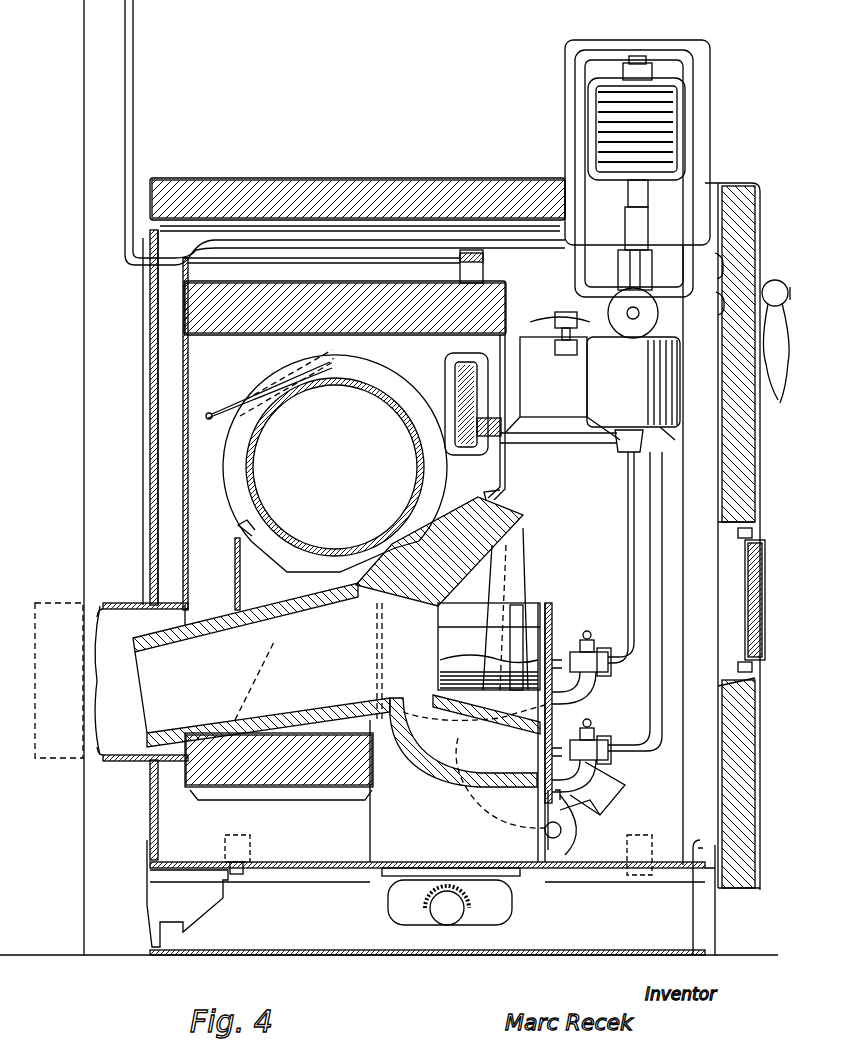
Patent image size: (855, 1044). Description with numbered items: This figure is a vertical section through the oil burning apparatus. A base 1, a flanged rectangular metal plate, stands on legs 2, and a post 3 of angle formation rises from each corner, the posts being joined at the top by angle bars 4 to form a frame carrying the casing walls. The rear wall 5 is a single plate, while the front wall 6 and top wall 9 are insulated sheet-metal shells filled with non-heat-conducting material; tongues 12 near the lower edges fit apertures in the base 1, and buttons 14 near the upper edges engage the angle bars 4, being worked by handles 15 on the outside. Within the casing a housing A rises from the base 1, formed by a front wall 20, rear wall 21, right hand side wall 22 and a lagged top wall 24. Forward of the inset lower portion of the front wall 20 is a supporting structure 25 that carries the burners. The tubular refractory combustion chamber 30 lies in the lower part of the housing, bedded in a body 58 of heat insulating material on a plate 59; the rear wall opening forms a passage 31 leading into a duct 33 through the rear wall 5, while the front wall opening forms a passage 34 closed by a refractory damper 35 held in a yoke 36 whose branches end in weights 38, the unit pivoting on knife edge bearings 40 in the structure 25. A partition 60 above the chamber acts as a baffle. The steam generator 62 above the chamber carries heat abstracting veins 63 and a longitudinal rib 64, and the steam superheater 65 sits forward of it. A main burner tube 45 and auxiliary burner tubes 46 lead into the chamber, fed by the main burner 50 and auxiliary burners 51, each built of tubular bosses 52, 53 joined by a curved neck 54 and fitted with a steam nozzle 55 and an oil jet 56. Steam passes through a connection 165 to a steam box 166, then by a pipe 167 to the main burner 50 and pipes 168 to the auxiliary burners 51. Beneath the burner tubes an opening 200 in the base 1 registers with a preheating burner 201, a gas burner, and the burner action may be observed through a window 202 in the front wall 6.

The base 1 is at (300, 862).
The legs 2 is at (208, 914).
The post 3 is at (157, 394).
The angle bars 4 is at (150, 230).
The rear wall 5 is at (155, 497).
The front wall 6 is at (725, 470).
The top wall 9 is at (403, 196).
The tongues 12 is at (240, 876).
The buttons 14 is at (460, 274).
The handles 15 is at (775, 280).
The front wall 20 is at (507, 452).
The rear wall 21 is at (189, 372).
The right hand side wall 22 is at (451, 397).
The lagged top wall 24 is at (365, 287).
The supporting structure 25 is at (543, 622).
The combustion chamber 30 is at (261, 665).
The passage 31 is at (188, 612).
The duct 33 is at (119, 606).
The passage 34 is at (485, 497).
The damper 35 is at (412, 526).
The yoke 36 is at (518, 576).
The weights 38 is at (612, 770).
The knife edge bearings 40 is at (440, 665).
The main burner tube 45 is at (432, 780).
The auxiliary burner tubes 46 is at (440, 640).
The main burner 50 is at (602, 790).
The auxiliary burners 51 is at (626, 697).
The tubular boss 52 is at (592, 652).
The tubular boss 53 is at (572, 690).
The curved neck 54 is at (600, 673).
The steam nozzle 55 is at (565, 652).
The oil jet 56 is at (550, 654).
The body of heat insulating material 58 is at (267, 710).
The plate 59 is at (292, 800).
The partition 60 is at (236, 562).
The steam generator 62 is at (269, 400).
The heat abstracting veins 63 is at (372, 366).
The longitudinal rib 64 is at (258, 510).
The steam superheater 65 is at (448, 392).
The connection 165 is at (515, 422).
The steam box 166 is at (605, 440).
The pipe 167 is at (652, 548).
The pipes 168 is at (626, 500).
The opening 200 is at (416, 862).
The preheating burner 201 is at (502, 893).
The window 202 is at (750, 592).
The housing A is at (496, 464).